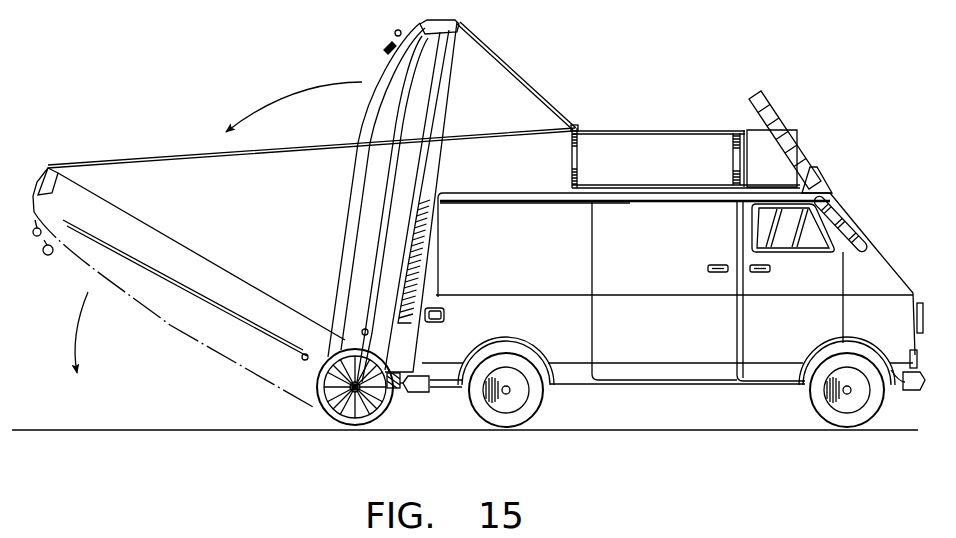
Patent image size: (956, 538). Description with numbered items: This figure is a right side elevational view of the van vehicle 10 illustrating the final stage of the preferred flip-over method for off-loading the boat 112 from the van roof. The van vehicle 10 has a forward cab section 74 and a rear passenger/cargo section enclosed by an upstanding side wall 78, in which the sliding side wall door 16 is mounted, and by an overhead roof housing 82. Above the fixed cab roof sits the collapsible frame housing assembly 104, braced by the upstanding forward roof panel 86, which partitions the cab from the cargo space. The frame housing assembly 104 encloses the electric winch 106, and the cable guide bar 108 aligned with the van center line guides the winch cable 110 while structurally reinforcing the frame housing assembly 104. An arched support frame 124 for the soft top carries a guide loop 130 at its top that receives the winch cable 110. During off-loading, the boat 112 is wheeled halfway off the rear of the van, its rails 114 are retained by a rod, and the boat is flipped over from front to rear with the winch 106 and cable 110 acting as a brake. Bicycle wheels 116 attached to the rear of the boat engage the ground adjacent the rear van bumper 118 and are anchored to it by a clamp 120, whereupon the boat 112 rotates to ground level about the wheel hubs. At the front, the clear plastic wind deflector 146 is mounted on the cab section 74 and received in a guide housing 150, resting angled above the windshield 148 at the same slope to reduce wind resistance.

The van vehicle 10 is at (628, 75).
The side wall door 16 is at (679, 310).
The forward cab section 74 is at (880, 242).
The side wall 78 is at (550, 267).
The roof housing 82 is at (551, 184).
The overhead roof panel 86 is at (730, 168).
The frame housing assembly 104 is at (737, 118).
The electric winch 106 is at (792, 180).
The cable guide bar 108 is at (731, 144).
The winch cable 110 is at (598, 129).
The boat 112 is at (197, 252).
The rails 114 is at (425, 272).
The bicycle wheels 116 is at (318, 406).
The rear van bumper 118 is at (421, 393).
The clamp 120 is at (396, 390).
The arched support frame 124 is at (572, 156).
The guide loop 130 is at (576, 126).
The wind deflector 146 is at (784, 111).
The windshield 148 is at (851, 228).
The guide housing 150 is at (818, 185).